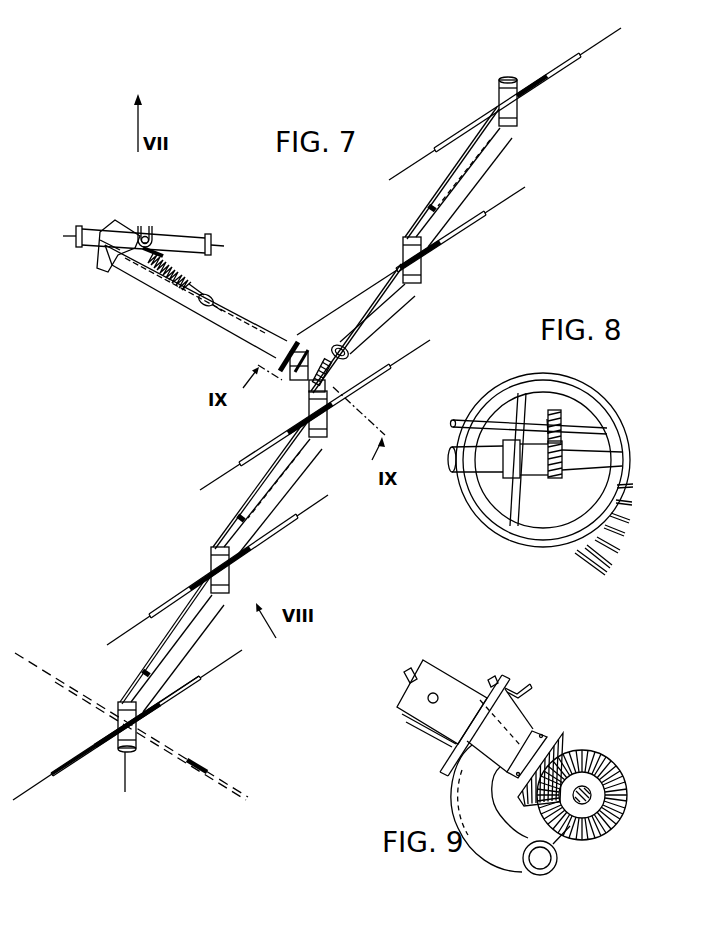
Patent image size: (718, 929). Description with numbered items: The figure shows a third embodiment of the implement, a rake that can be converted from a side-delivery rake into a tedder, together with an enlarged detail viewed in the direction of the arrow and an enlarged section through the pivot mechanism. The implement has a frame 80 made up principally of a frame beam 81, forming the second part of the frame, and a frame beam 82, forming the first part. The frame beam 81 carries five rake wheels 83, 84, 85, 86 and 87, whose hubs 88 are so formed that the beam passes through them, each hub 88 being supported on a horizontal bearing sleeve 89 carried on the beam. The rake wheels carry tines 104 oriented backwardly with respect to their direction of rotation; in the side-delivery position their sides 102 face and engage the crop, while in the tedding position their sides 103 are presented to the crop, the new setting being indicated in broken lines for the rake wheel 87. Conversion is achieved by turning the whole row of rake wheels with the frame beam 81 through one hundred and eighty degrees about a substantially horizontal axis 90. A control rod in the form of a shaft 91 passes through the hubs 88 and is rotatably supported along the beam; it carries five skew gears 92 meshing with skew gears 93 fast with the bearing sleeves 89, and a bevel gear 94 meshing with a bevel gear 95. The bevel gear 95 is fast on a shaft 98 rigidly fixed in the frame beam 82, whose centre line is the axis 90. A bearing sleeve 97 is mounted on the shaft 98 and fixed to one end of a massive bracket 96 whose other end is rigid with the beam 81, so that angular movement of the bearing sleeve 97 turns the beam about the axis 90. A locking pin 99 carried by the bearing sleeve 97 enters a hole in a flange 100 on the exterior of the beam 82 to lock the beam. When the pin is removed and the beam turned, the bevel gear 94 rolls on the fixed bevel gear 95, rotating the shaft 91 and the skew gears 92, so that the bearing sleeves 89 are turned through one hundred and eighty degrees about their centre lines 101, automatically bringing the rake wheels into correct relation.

In FIG. 7, the frame 80 is at (146, 290).
In FIG. 9, the frame 80 is at (446, 655).
In FIG. 7, the frame beam 81 is at (312, 450).
In FIG. 8, the frame beam 81 is at (458, 465).
In FIG. 9, the frame beam 81 is at (527, 863).
In FIG. 7, the frame beam 82 is at (244, 326).
In FIG. 7, the rake wheel 83 is at (570, 62).
In FIG. 7, the rake wheel 84 is at (465, 225).
In FIG. 7, the rake wheel 85 is at (402, 357).
In FIG. 7, the rake wheel 86 is at (298, 520).
In FIG. 7, the rake wheel 87 is at (195, 679).
In FIG. 7, the hub 88 is at (160, 708).
In FIG. 8, the hub 88 is at (506, 540).
In FIG. 7, the bearing sleeve 89 is at (230, 578).
In FIG. 8, the bearing sleeve 89 is at (519, 471).
In FIG. 7, the axis 90 is at (277, 345).
In FIG. 7, the shaft 91 is at (277, 471).
In FIG. 8, the shaft 91 is at (457, 419).
In FIG. 9, the shaft 91 is at (584, 808).
In FIG. 7, the skew gear 92 is at (225, 549).
In FIG. 8, the skew gear 92 is at (554, 421).
In FIG. 7, the skew gear 93 is at (240, 551).
In FIG. 8, the skew gear 93 is at (549, 476).
In FIG. 7, the bevel gear 94 is at (342, 376).
In FIG. 9, the bevel gear 94 is at (624, 771).
In FIG. 7, the bevel gear 95 is at (308, 385).
In FIG. 9, the bevel gear 95 is at (576, 737).
In FIG. 9, the bracket 96 is at (470, 788).
In FIG. 7, the bearing sleeve 97 is at (299, 380).
In FIG. 9, the bearing sleeve 97 is at (508, 725).
In FIG. 7, the shaft 98 is at (314, 360).
In FIG. 9, the shaft 98 is at (543, 737).
In FIG. 7, the locking pin 99 is at (267, 358).
In FIG. 9, the locking pin 99 is at (529, 682).
In FIG. 9, the flange 100 is at (448, 757).
In FIG. 7, the centre line 101 is at (126, 790).
In FIG. 7, the side of rake wheel 102 is at (80, 758).
In FIG. 7, the side of rake wheel 103 is at (228, 778).
In FIG. 7, the tine 104 is at (30, 794).